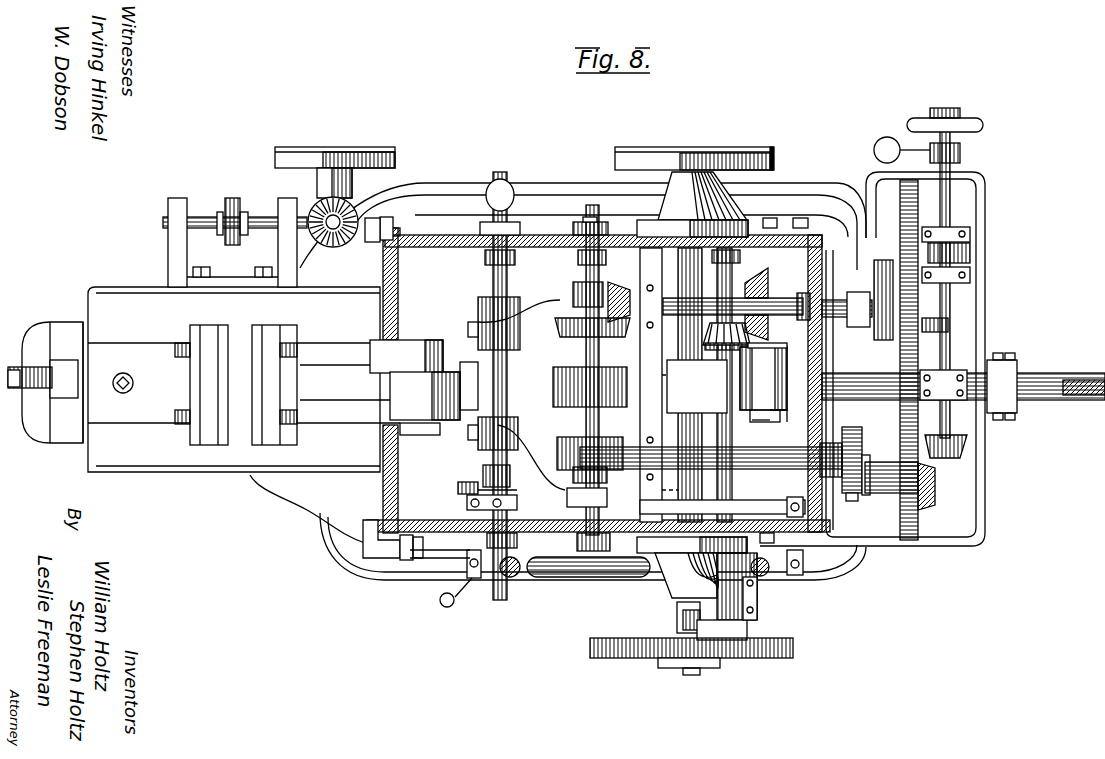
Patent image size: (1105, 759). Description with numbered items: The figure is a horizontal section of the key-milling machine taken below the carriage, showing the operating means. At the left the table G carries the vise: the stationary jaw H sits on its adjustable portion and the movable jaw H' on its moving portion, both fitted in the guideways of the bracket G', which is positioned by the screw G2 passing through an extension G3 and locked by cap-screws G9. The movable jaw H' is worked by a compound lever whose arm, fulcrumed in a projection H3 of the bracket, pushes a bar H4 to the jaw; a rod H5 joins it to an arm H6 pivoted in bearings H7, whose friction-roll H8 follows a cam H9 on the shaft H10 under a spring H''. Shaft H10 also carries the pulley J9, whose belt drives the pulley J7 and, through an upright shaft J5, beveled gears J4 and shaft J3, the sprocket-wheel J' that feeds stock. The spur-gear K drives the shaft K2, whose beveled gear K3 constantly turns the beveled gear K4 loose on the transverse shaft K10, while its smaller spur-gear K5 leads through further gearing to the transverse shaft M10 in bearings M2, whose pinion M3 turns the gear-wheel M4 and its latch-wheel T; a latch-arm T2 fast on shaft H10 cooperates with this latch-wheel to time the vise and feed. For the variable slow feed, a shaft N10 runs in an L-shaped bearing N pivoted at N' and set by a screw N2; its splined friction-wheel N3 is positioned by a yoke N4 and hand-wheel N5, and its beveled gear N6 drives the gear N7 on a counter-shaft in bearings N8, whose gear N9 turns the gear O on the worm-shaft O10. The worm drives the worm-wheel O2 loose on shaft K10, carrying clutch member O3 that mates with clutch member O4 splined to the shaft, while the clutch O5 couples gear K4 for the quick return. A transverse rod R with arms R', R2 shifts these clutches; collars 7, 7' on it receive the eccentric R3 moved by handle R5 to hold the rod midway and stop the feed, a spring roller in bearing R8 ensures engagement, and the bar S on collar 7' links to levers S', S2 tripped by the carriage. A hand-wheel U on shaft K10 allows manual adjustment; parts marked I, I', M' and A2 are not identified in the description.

The table G is at (234, 379).
The bracket G' is at (558, 527).
The screw G2 is at (66, 392).
The extension G3 is at (28, 362).
The cap-screw G9 is at (416, 205).
The stationary jaw H is at (194, 377).
The movable jaw H' is at (279, 373).
The spring H'' is at (776, 344).
The projection H3 is at (406, 356).
The bar H4 is at (348, 383).
The rod H5 is at (540, 392).
The arm H6 is at (780, 424).
The bearings H7 is at (785, 386).
The friction-roll H8 is at (434, 398).
The cam H9 is at (697, 386).
The shaft H10 is at (705, 147).
The shaft sleeve I is at (718, 586).
The plate I' is at (710, 385).
The sprocket-wheel J' is at (235, 213).
The shaft J3 is at (200, 215).
The beveled gears J4 is at (336, 242).
The upright shaft J5 is at (380, 222).
The pulley J7 is at (388, 160).
The pulley J9 is at (773, 150).
The spur-gear K is at (934, 329).
The shaft K2 is at (772, 302).
The beveled gear K3 is at (622, 285).
The beveled gear K4 is at (612, 334).
The spur-gear K5 is at (875, 280).
The transverse shaft K10 is at (590, 218).
The bevel gear M' is at (714, 385).
The bearings M2 is at (757, 618).
The pinion M3 is at (750, 635).
The gear-wheel M4 is at (698, 660).
The transverse shaft M10 is at (760, 424).
The bearing N is at (943, 341).
The pivot N' is at (902, 128).
The screw N2 is at (874, 152).
The friction-wheel N3 is at (970, 265).
The yoke N4 is at (970, 230).
The hand-wheel N5 is at (984, 124).
The beveled gear N6 is at (967, 444).
The beveled gear N7 is at (935, 495).
The bearings N8 is at (910, 495).
The gear N9 is at (872, 460).
The shaft N10 is at (950, 198).
The gear O is at (848, 425).
The worm-wheel O2 is at (605, 440).
The clutch member O3 is at (607, 475).
The clutch member O4 is at (555, 455).
The clutch O5 is at (560, 308).
The worm-shaft O10 is at (775, 460).
The rod R is at (504, 374).
The arm R' is at (485, 435).
The arm R2 is at (478, 315).
The eccentric R3 is at (458, 492).
The handle R5 is at (477, 579).
The bearing R8 is at (490, 182).
The collar 7 is at (486, 475).
The collar 7' is at (506, 499).
The bar S is at (722, 502).
The lever S' is at (508, 583).
The lever S2 is at (765, 578).
The latch-wheel T is at (643, 632).
The latch-arm T2 is at (677, 617).
The hand-wheel U is at (556, 578).
The main shaft A2 is at (1062, 380).